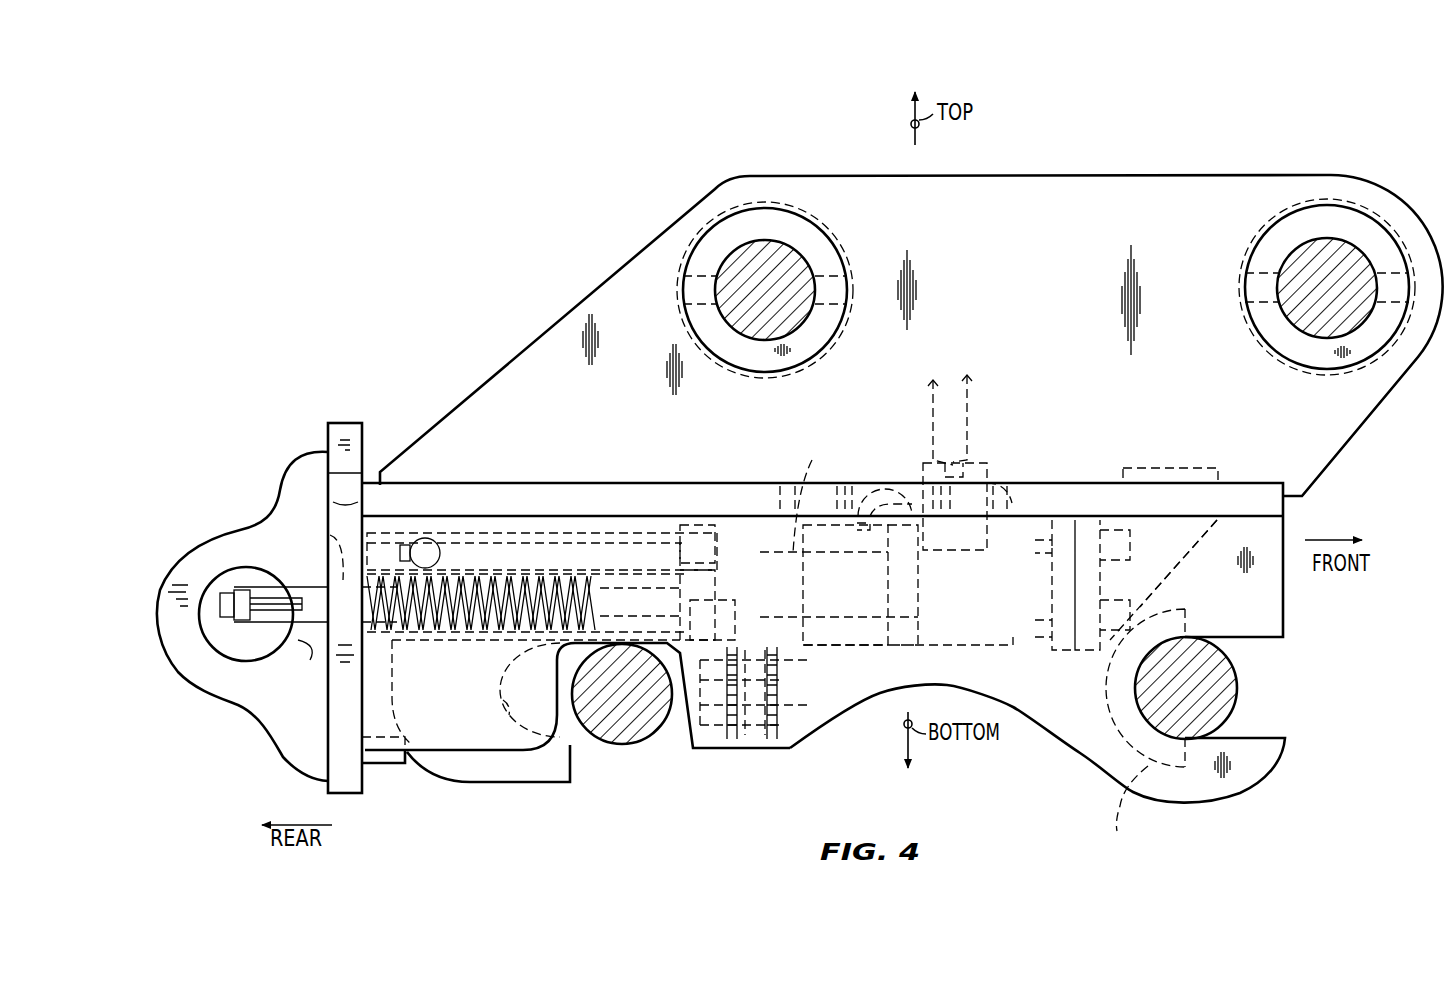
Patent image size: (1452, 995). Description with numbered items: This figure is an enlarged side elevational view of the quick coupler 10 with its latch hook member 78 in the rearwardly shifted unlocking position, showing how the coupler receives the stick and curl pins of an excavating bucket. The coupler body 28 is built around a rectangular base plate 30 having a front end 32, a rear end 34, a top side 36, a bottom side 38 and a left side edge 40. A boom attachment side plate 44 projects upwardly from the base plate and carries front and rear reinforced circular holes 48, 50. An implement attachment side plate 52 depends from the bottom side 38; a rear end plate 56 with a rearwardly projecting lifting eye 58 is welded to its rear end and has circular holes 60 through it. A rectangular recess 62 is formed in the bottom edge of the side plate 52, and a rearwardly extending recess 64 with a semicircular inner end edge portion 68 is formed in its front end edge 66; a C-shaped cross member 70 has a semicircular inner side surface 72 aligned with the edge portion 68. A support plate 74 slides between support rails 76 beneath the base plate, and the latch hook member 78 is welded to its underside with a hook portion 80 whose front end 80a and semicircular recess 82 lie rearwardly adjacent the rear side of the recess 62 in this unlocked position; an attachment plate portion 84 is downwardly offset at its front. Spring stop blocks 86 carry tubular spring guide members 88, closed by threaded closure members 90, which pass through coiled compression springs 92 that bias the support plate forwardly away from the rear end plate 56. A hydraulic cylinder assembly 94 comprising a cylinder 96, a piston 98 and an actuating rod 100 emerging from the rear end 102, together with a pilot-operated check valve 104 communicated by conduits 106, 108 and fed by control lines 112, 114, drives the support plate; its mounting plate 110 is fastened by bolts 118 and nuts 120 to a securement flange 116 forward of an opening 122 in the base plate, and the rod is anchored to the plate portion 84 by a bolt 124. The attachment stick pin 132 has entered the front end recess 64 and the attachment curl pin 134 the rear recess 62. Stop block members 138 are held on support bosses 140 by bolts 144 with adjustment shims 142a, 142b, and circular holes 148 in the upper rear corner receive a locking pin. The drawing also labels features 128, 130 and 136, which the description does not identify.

The quick coupler 10 is at (1190, 128).
The coupler body 28 is at (515, 343).
The base plate 30 is at (610, 487).
The front end 32 is at (1295, 488).
The rear end 34 is at (338, 504).
The top side 36 is at (708, 480).
The bottom side 38 is at (730, 498).
The left side edge 40 is at (1244, 488).
The boom attachment side plate 44 is at (1056, 297).
The front reinforced circular hole 48 is at (1340, 235).
The rear reinforced circular hole 50 is at (799, 254).
The implement attachment side plate 52 is at (1097, 775).
The rear end plate 56 is at (337, 715).
The lifting eye 58 is at (271, 745).
The circular hole 60 is at (332, 546).
The rectangular recess 62 is at (552, 697).
The front end recess 64 is at (1264, 727).
The front end edge 66 is at (1283, 588).
The semicircular inner end edge portion 68 is at (1150, 691).
The semicircular inner side surface 72 is at (1152, 689).
The cross member 70 is at (1127, 805).
The support plate 74 is at (500, 527).
The support rails 76 is at (532, 526).
The latch hook member 78 is at (380, 684).
The hook portion 80 is at (527, 785).
The front end 80a is at (574, 788).
The semicircular recess 82 is at (492, 710).
The attachment plate portion 84 is at (728, 625).
The spring stop block 86 is at (622, 620).
The tubular spring guide member 88 is at (295, 633).
The threaded closure member 90 is at (218, 596).
The coiled compression spring 92 is at (418, 650).
The hydraulic cylinder assembly 94 is at (944, 650).
The cylinder 96 is at (1008, 657).
The piston 98 is at (918, 624).
The actuating rod 100 is at (812, 460).
The rear end 102 is at (803, 590).
The pilot-operated check valve 104 is at (985, 471).
The conduit 106 is at (890, 483).
The conduit 108 is at (1037, 518).
The mounting plate 110 is at (1057, 520).
The pilot pressure hydraulic control line 112 is at (920, 404).
The pilot pressure hydraulic control line 114 is at (972, 406).
The securement flange 116 is at (1100, 600).
The bolt 118 is at (1042, 585).
The nut 120 is at (1130, 516).
The opening 122 is at (998, 469).
The bolt 124 is at (704, 598).
The front pin bore 128 is at (1314, 228).
The rear pin bore 130 is at (743, 268).
The attachment stick pin 132 is at (1223, 660).
The attachment curl pin 134 is at (633, 733).
The cradle surface 136 is at (646, 727).
The stop block member 138 is at (690, 730).
The support boss 140 is at (756, 750).
The adjustment shim 142a is at (737, 760).
The adjustment shim 142b is at (793, 748).
The bolt 144 is at (788, 675).
The circular hole 148 is at (460, 496).